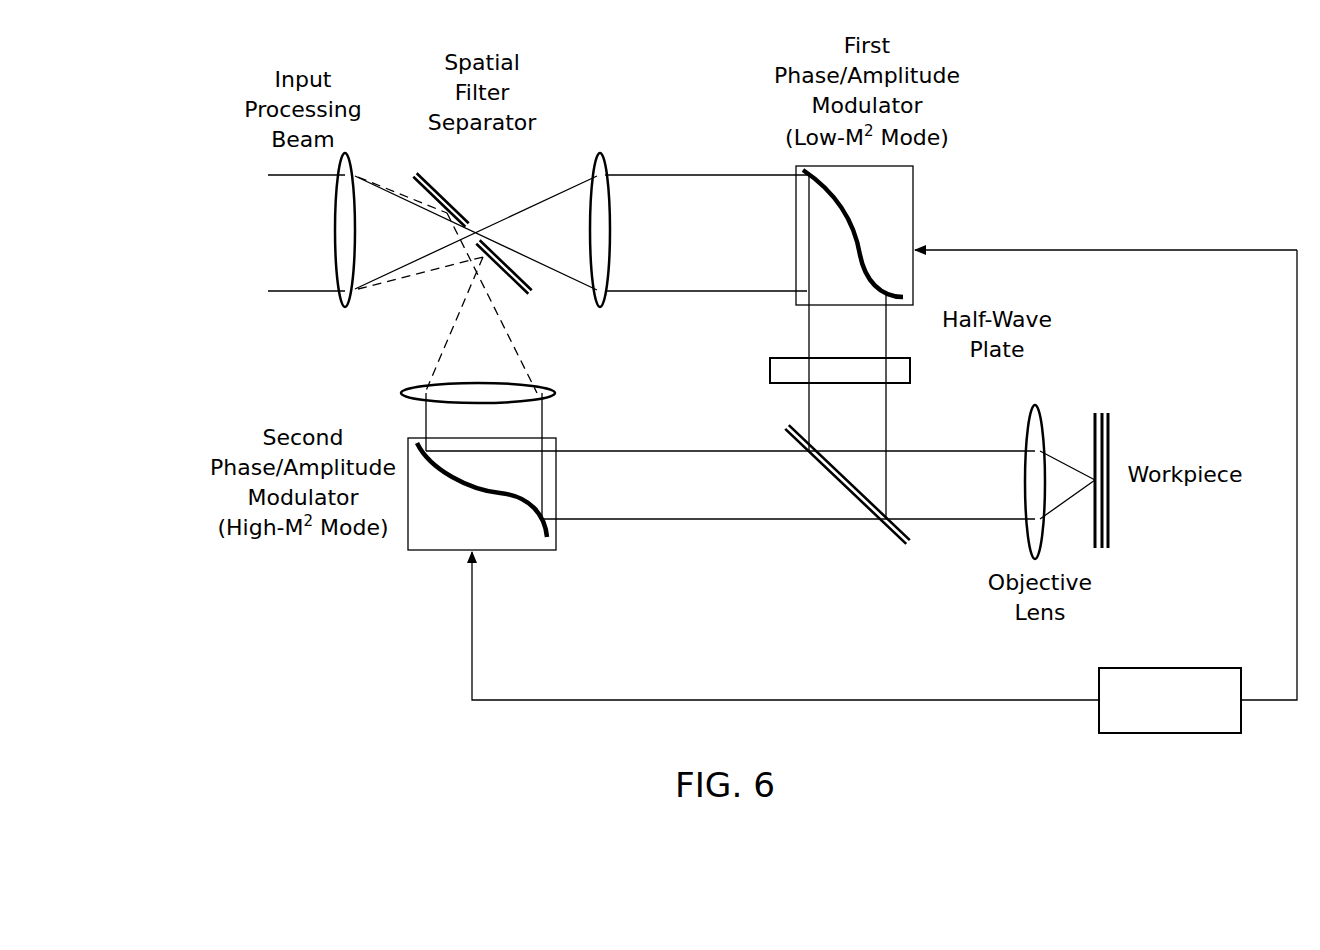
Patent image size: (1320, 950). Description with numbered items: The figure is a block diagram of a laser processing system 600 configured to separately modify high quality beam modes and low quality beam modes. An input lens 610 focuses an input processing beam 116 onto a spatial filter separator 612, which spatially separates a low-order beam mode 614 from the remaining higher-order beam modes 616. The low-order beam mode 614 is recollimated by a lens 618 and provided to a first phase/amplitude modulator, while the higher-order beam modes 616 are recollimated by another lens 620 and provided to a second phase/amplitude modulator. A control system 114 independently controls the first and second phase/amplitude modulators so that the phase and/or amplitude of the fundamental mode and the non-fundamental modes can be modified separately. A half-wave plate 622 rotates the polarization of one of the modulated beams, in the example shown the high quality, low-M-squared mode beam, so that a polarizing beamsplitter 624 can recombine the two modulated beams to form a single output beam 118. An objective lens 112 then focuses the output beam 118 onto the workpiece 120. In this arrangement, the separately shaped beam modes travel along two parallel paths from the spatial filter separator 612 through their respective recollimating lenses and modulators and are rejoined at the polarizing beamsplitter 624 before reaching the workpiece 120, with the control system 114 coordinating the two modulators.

The laser processing system 600 is at (200, 145).
The input lens 610 is at (333, 258).
The input processing beam 116 is at (306, 292).
The spatial filter separator 612 is at (451, 213).
The low-order beam mode 614 is at (549, 195).
The higher-order beam modes 616 is at (457, 325).
The lens 618 is at (598, 306).
The lens 620 is at (555, 393).
The half-wave plate 622 is at (910, 380).
The output beam 118 is at (967, 522).
The polarizing beamsplitter 624 is at (893, 535).
The objective lens 112 is at (1030, 410).
The workpiece 120 is at (1108, 532).
The control system 114 is at (1147, 668).